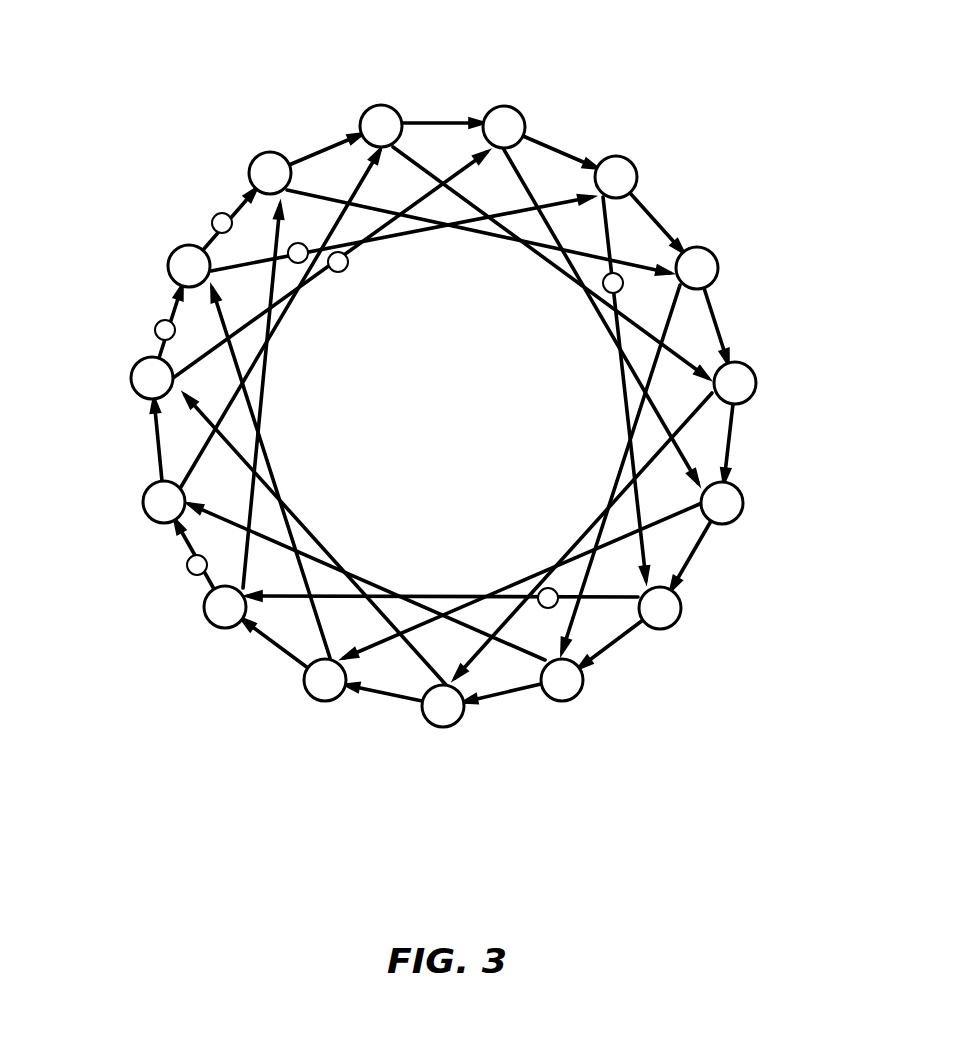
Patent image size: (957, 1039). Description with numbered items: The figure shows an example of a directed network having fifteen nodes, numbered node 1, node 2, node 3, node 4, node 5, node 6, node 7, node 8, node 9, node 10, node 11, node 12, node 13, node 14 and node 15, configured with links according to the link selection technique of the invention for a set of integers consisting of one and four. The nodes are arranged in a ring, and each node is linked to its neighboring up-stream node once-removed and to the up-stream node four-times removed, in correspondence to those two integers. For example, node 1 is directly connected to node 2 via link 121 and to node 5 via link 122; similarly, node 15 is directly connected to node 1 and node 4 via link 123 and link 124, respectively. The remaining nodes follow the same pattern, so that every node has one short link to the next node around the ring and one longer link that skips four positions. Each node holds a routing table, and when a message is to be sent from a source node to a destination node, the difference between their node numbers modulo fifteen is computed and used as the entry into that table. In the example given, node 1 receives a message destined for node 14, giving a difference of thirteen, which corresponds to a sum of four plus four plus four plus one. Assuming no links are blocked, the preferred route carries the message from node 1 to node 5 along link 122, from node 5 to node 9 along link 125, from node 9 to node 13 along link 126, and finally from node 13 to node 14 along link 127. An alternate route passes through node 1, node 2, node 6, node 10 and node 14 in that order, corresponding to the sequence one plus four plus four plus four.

The node 1 is at (171, 253).
The node 2 is at (256, 157).
The node 3 is at (378, 105).
The node 4 is at (505, 107).
The node 5 is at (628, 157).
The node 6 is at (717, 255).
The node 7 is at (755, 378).
The node 8 is at (743, 508).
The node 9 is at (678, 627).
The node 10 is at (573, 703).
The node 11 is at (445, 727).
The node 12 is at (312, 698).
The node 13 is at (207, 627).
The node 14 is at (142, 510).
The node 15 is at (130, 378).
The link 121 is at (215, 215).
The link 122 is at (295, 263).
The link 123 is at (155, 327).
The link 124 is at (333, 270).
The link 125 is at (604, 290).
The link 126 is at (543, 592).
The link 127 is at (187, 568).